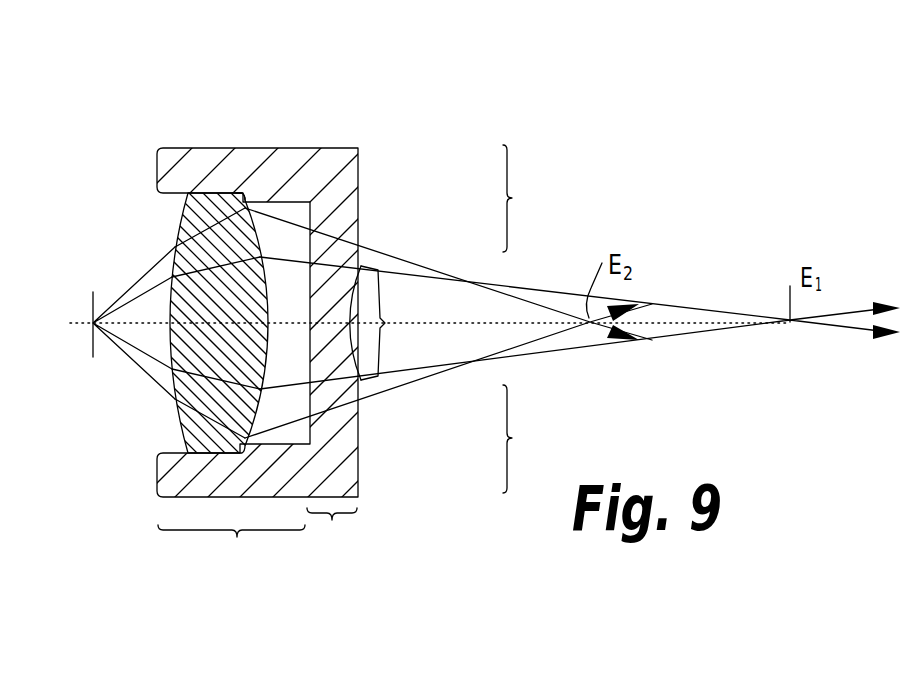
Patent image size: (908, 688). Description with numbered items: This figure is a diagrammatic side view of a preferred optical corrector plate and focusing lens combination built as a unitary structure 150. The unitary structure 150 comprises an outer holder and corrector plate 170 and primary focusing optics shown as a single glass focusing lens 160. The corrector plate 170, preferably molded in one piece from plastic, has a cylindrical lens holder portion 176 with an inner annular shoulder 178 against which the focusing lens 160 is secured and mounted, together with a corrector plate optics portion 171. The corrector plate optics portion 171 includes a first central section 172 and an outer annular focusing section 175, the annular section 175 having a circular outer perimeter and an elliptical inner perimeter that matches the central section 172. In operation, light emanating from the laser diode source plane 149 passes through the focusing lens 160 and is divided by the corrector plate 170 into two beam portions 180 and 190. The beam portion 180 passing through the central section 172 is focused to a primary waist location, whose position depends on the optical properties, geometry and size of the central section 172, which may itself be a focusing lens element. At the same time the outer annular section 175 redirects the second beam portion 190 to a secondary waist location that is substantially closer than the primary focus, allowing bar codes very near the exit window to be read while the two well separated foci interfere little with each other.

The source plane 149 is at (93, 357).
The unitary structure 150 is at (358, 98).
The focusing lens 160 is at (183, 228).
The outer holder and corrector plate 170 is at (364, 156).
The corrector plate optics portion 171 is at (332, 530).
The central section 172 is at (392, 323).
The outer annular focusing section 175 is at (531, 319).
The cylindrical lens holder portion 176 is at (231, 547).
The inner annular shoulder 178 is at (243, 193).
The beam portion 180 is at (677, 302).
The beam portion 190 is at (402, 260).